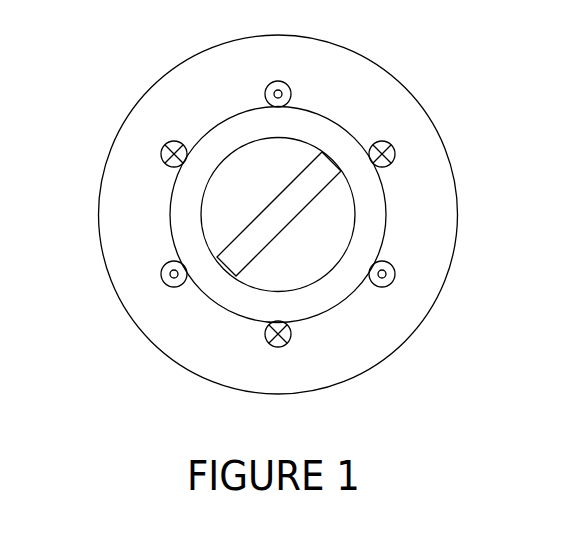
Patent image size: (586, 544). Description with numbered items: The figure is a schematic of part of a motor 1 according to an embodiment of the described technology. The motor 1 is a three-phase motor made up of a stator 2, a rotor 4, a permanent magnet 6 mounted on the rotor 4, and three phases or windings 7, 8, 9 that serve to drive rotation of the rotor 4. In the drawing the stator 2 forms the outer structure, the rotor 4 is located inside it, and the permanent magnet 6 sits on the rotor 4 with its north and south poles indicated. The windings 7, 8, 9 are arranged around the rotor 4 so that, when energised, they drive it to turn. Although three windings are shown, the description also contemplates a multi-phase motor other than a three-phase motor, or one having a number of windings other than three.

The motor 1 is at (436, 71).
The stator 2 is at (181, 89).
The rotor 4 is at (340, 216).
The permanent magnet 6 is at (250, 236).
The winding 7 is at (270, 83).
The winding 8 is at (396, 153).
The winding 9 is at (395, 279).